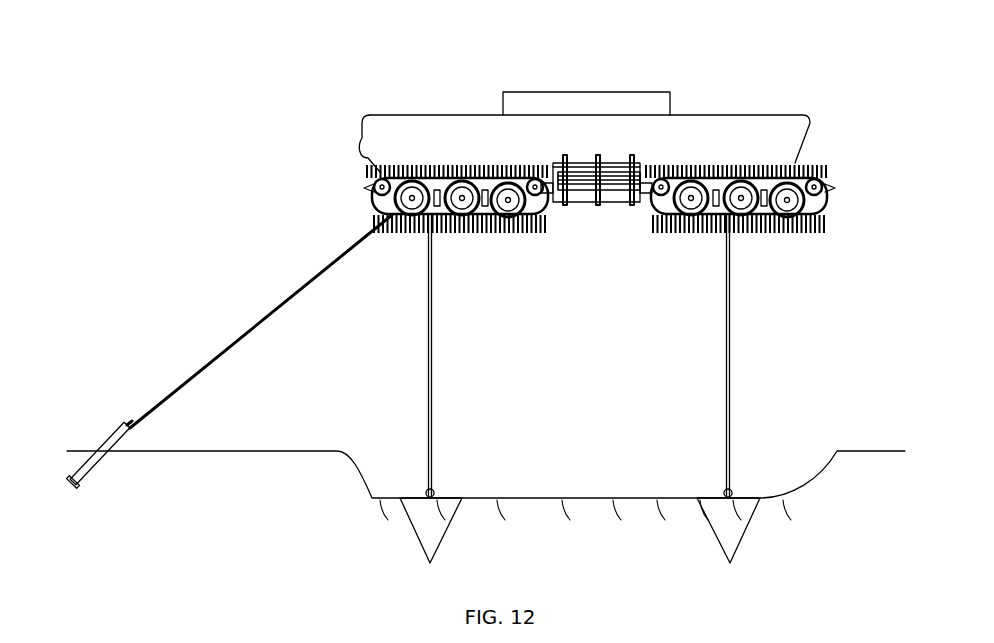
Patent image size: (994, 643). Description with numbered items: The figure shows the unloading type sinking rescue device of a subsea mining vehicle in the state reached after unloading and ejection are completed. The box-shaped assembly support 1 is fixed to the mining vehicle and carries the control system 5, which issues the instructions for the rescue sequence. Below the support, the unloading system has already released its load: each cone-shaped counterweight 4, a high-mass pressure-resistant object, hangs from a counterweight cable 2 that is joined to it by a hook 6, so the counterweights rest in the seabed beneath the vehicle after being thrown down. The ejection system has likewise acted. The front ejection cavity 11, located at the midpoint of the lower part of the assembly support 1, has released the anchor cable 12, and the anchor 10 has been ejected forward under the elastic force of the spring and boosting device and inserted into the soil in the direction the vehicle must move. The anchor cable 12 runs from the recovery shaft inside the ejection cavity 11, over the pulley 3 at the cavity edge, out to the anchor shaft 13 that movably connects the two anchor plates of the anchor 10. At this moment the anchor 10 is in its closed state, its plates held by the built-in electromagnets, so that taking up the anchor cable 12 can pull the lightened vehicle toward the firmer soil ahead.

The assembly support 1 is at (688, 133).
The counterweight cable 2 is at (728, 282).
The pulley 3 is at (600, 210).
The counterweight 4 is at (735, 513).
The control system 5 is at (547, 107).
The hook 6 is at (425, 492).
The anchor 10 is at (615, 168).
The ejection cavity 11 is at (587, 195).
The anchor cable 12 is at (293, 290).
The anchor shaft 13 is at (130, 430).